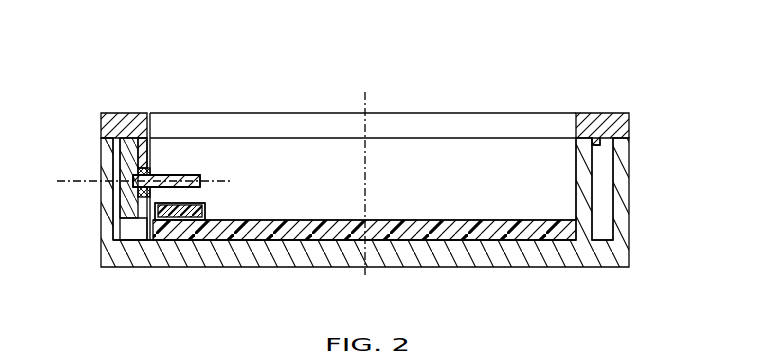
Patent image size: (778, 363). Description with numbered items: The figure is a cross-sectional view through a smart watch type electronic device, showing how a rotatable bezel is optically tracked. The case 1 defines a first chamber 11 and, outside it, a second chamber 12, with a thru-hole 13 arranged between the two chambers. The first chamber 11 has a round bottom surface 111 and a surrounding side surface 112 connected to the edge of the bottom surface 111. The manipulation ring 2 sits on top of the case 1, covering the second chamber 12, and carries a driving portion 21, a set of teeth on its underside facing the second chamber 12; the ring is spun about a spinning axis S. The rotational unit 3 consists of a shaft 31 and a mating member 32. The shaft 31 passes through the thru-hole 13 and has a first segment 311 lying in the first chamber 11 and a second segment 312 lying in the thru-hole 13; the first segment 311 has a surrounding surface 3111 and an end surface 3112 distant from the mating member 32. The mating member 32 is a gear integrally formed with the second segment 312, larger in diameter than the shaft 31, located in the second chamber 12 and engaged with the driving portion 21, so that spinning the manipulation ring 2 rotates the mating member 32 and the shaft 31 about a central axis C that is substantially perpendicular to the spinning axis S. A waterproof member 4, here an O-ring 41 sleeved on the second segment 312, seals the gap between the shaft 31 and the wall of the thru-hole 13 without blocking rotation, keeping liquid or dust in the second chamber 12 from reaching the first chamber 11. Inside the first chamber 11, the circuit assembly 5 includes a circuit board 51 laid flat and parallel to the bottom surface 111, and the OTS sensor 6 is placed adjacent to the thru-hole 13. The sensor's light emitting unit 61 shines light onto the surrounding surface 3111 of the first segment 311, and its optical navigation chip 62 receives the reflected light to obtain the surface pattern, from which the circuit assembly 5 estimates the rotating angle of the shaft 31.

The case 1 is at (638, 179).
The first chamber 11 is at (436, 160).
The bottom surface 111 is at (507, 238).
The surrounding side surface 112 is at (574, 168).
The second chamber 12 is at (601, 207).
The thru-hole 13 is at (122, 214).
The manipulation ring 2 is at (609, 109).
The driving portion 21 is at (601, 142).
The rotational unit 3 is at (187, 49).
The shaft 31 is at (220, 82).
The first segment 311 is at (198, 172).
The surrounding surface 3111 is at (202, 170).
The end surface 3112 is at (205, 188).
The second segment 312 is at (140, 168).
The mating member 32 is at (102, 138).
The waterproof member 4 is at (128, 169).
The O-ring 41 is at (138, 190).
The circuit assembly 5 is at (449, 219).
The circuit board 51 is at (391, 232).
The optical tracking system (OTS) sensor 6 is at (215, 300).
The light emitting unit 61 is at (156, 212).
The optical navigation chip 62 is at (194, 210).
The spinning axis S is at (366, 103).
The central axis C is at (68, 181).